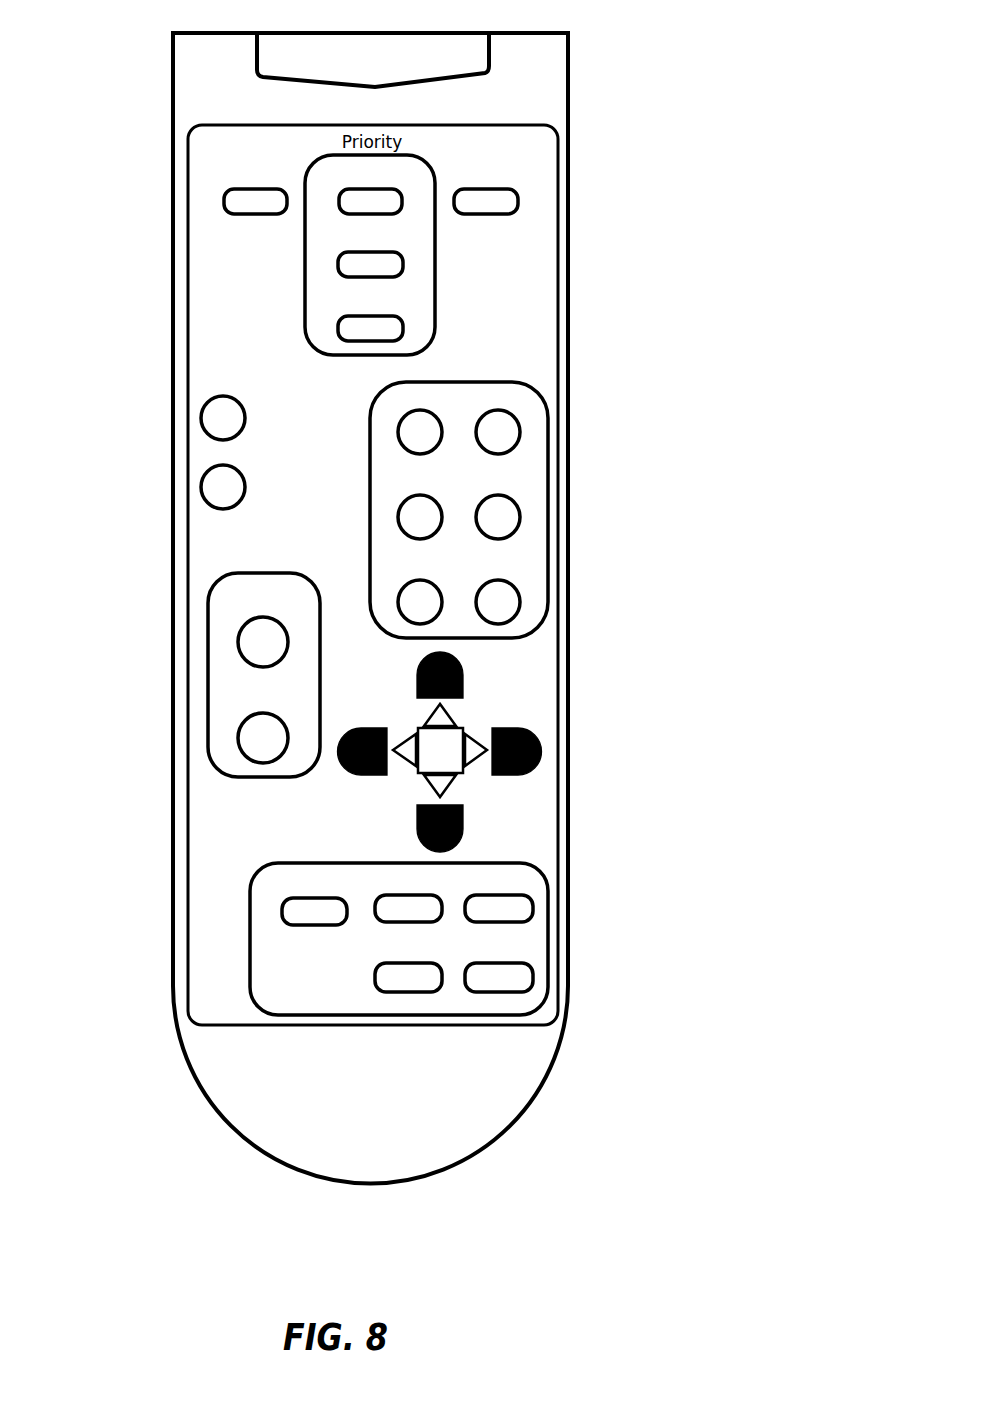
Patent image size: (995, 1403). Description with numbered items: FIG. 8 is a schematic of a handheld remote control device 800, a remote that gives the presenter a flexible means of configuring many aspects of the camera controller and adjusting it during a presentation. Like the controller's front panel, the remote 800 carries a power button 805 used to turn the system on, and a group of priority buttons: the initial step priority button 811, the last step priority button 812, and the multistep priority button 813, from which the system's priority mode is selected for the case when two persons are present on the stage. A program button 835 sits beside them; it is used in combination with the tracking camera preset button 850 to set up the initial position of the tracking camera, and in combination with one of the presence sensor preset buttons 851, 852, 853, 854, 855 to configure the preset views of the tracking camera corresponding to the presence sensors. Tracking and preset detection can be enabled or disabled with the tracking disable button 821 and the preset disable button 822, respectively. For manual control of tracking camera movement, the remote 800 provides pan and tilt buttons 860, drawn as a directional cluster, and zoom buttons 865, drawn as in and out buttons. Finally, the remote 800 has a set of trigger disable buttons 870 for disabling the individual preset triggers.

The handheld remote control device 800 is at (173, 135).
The power button 805 is at (235, 216).
The initial step priority button 811 is at (401, 200).
The last step priority button 812 is at (403, 264).
The multistep priority button 813 is at (403, 326).
The program button 835 is at (518, 201).
The tracking disable button 821 is at (201, 413).
The preset disable button 822 is at (201, 481).
The tracking camera preset button 850 is at (520, 607).
The preset button 851 is at (441, 445).
The preset button 852 is at (520, 437).
The preset button 853 is at (442, 529).
The preset button 854 is at (520, 519).
The preset button 855 is at (442, 614).
The zoom buttons 865 is at (208, 680).
The pan and tilt buttons 860 is at (530, 768).
The trigger disable buttons 870 is at (548, 928).